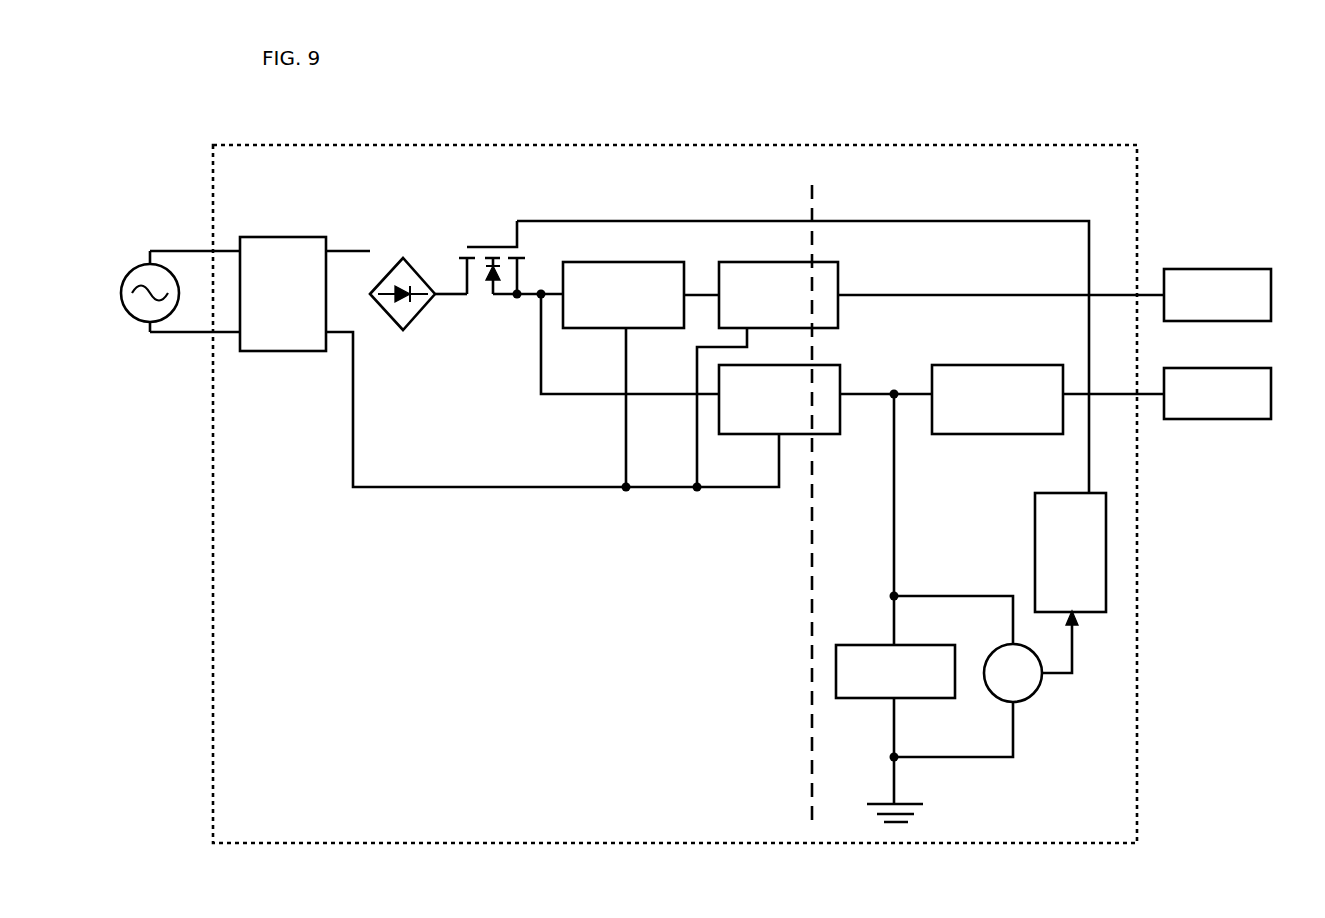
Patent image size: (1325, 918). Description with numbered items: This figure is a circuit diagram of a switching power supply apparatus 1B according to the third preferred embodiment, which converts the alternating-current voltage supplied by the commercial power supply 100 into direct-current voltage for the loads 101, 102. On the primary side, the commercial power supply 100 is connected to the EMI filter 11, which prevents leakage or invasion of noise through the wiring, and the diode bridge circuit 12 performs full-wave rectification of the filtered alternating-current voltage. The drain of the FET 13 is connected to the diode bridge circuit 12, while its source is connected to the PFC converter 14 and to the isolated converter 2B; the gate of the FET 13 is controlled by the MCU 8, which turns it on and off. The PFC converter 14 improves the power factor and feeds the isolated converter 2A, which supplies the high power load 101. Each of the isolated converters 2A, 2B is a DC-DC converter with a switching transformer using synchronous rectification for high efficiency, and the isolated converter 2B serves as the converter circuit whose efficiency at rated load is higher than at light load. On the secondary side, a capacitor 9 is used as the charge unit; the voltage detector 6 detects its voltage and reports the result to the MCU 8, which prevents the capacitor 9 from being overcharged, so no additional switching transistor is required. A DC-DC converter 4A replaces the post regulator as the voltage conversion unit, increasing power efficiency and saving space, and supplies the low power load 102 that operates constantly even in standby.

The switching power supply apparatus 1B is at (233, 145).
The commercial power supply 100 is at (130, 266).
The EMI filter 11 is at (260, 237).
The diode bridge circuit 12 is at (415, 262).
The FET 13 is at (485, 312).
The PFC converter 14 is at (684, 264).
The isolated converter 2A is at (840, 273).
The isolated converter 2B is at (840, 366).
The DC-DC converter 4A is at (1023, 365).
The MCU 8 is at (1050, 493).
The capacitor 9 is at (876, 644).
The voltage detector 6 is at (1038, 693).
The load 101 is at (1272, 275).
The load 102 is at (1272, 374).